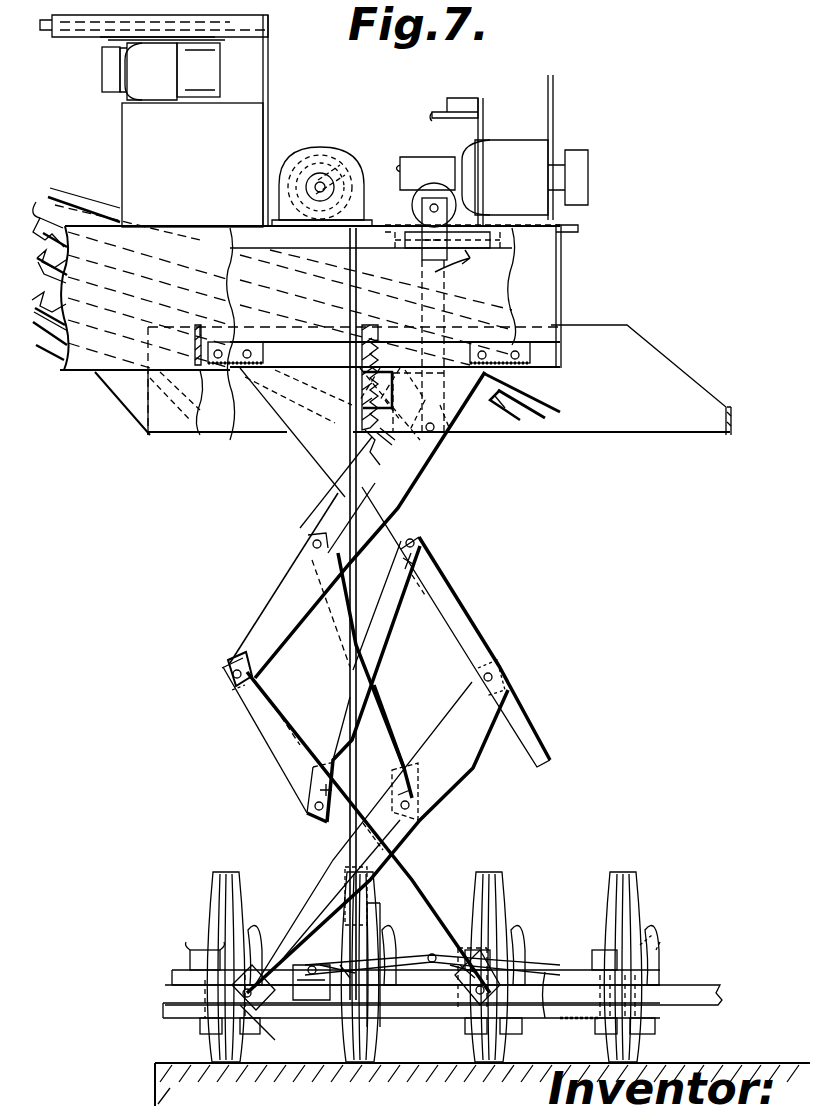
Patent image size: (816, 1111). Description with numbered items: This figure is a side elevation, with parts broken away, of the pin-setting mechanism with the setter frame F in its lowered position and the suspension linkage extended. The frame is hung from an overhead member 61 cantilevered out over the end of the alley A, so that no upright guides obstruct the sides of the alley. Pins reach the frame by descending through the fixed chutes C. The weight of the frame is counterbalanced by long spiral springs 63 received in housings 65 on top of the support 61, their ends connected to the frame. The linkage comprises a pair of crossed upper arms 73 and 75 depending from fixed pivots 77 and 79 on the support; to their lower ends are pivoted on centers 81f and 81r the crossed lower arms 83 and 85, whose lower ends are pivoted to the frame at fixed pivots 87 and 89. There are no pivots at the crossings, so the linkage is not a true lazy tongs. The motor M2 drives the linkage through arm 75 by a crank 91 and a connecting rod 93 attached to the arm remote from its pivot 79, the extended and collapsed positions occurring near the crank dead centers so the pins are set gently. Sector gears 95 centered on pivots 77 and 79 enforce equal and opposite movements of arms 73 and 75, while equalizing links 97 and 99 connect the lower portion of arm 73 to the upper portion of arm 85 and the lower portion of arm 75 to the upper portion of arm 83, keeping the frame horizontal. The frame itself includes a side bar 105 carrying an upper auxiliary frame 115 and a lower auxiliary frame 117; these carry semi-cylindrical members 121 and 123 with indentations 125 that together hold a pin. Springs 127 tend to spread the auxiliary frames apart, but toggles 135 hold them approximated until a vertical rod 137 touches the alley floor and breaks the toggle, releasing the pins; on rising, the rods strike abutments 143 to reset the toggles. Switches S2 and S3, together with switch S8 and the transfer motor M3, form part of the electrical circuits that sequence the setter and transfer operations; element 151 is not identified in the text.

The switch S8 is at (115, 56).
The motor M3 is at (160, 66).
The fixed chutes C is at (70, 198).
The housings 65 is at (314, 150).
The spiral springs 63 is at (346, 162).
The switch S3 is at (446, 105).
The motor M2 is at (530, 148).
The overhead member 61 is at (560, 272).
The fixed pivot 79 is at (556, 318).
The crank 91 is at (423, 262).
The connecting rod 93 is at (437, 316).
The fixed pivot 77 is at (246, 362).
The abutments 143 is at (405, 436).
The sector gears 95 is at (305, 445).
The switch S2 is at (530, 410).
The arm 75 is at (330, 516).
The arm 73 is at (445, 585).
The equalizing link 99 is at (342, 620).
The equalizing link 97 is at (385, 640).
The pivot center 81f is at (492, 672).
The pivot center 81r is at (232, 680).
The arm 85 is at (290, 770).
The arm 83 is at (440, 770).
The setter frame F is at (676, 935).
The side bar 105 is at (708, 992).
The semi-cylindrical member 121 is at (660, 940).
The fork bracket 151 is at (648, 955).
The semi-cylindrical member 123 is at (605, 966).
The lower auxiliary frame 117 is at (655, 1020).
The upper auxiliary frame 115 is at (534, 1013).
The indentations 125 is at (583, 1018).
The fixed pivot 89 is at (505, 958).
The vertical rod 137 is at (430, 910).
The spring 127 is at (445, 955).
The toggle 135 is at (320, 950).
The fixed pivot 87 is at (262, 1010).
The alley A is at (435, 1044).